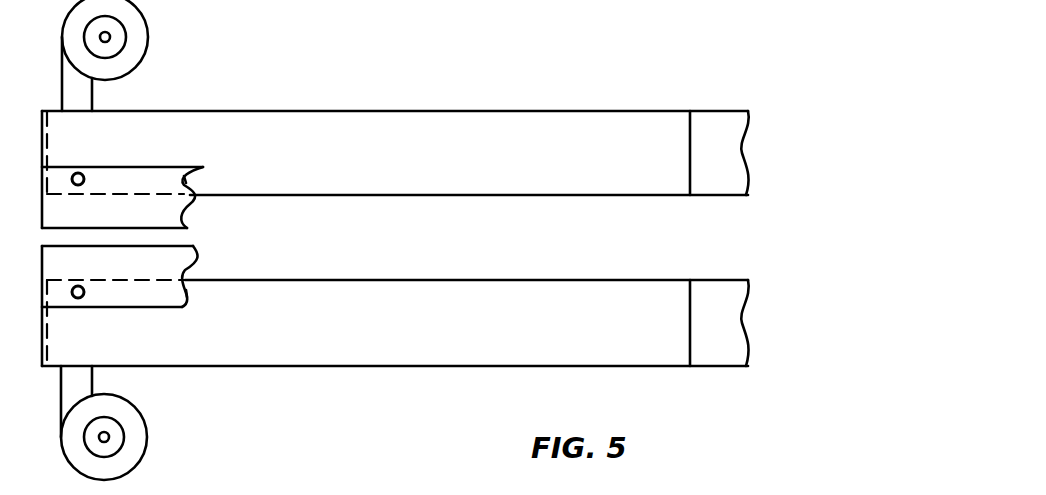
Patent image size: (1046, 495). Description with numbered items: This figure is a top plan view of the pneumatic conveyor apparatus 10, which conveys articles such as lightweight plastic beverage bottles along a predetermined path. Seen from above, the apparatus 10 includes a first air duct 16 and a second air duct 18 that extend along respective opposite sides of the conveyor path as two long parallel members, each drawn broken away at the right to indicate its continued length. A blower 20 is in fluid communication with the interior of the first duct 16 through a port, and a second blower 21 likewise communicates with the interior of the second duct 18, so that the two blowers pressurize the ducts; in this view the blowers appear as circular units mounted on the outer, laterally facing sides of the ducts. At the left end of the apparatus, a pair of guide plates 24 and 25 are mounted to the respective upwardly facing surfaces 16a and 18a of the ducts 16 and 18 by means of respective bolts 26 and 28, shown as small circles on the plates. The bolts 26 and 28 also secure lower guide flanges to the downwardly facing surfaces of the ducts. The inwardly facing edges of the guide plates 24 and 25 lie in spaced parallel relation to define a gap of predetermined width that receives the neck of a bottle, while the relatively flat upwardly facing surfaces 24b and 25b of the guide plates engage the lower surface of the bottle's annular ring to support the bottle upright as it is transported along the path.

The apparatus 10 is at (446, 66).
The first air duct 16 is at (280, 111).
The upwardly facing surface 16a is at (433, 161).
The second air duct 18 is at (283, 366).
The upwardly facing surface 18a is at (426, 329).
The blower 20 is at (148, 35).
The blower 21 is at (147, 437).
The guide plate 24 is at (187, 210).
The upwardly facing surface 24b is at (183, 174).
The guide plate 25 is at (197, 263).
The upwardly facing surface 25b is at (176, 297).
The bolt 26 is at (78, 172).
The bolt 28 is at (78, 298).